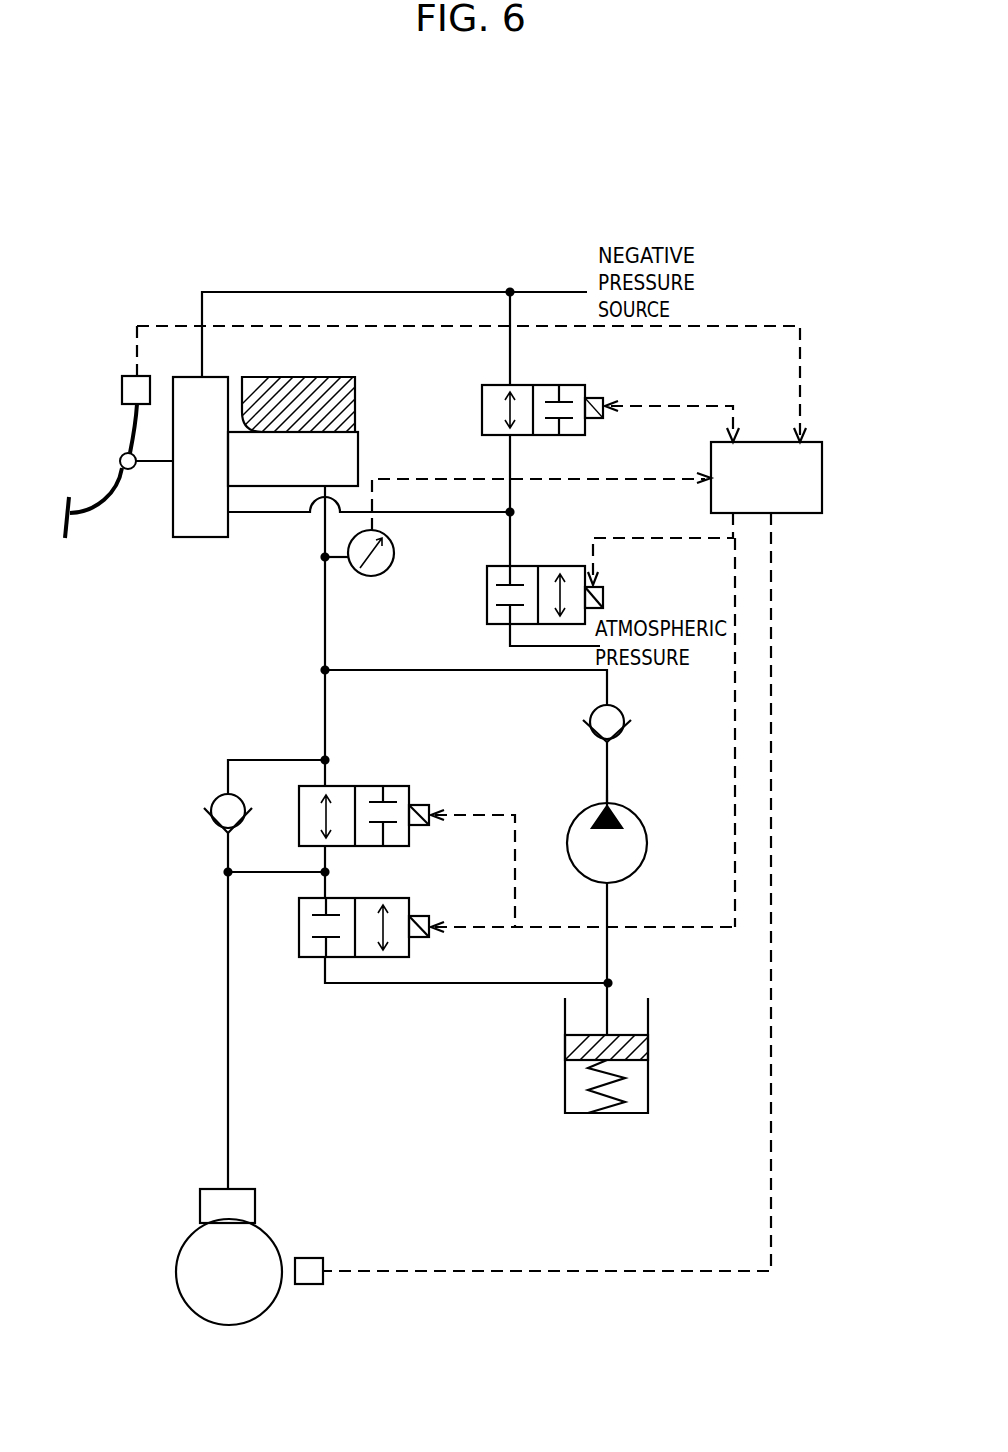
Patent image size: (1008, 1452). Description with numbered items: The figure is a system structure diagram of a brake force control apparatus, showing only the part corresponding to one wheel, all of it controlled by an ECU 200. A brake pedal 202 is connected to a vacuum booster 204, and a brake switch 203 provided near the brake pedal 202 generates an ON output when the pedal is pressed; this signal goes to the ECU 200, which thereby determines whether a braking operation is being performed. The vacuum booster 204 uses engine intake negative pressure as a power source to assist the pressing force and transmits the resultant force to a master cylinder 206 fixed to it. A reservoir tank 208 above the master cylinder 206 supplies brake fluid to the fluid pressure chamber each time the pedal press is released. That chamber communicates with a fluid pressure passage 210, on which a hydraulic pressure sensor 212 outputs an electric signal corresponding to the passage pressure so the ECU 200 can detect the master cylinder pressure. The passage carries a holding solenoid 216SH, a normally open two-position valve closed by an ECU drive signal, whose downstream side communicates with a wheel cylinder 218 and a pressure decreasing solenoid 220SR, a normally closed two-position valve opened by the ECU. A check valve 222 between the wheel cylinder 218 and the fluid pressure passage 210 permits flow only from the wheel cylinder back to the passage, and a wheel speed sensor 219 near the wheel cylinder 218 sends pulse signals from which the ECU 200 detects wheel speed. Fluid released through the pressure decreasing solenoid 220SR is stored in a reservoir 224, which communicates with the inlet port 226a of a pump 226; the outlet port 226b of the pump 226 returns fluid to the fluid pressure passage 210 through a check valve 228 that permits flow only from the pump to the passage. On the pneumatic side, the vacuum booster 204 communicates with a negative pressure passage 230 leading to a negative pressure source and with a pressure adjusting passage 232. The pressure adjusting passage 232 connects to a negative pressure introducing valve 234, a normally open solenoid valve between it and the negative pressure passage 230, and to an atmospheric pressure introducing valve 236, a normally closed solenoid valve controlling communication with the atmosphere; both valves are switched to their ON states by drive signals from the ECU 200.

The ECU 200 is at (822, 470).
The brake pedal 202 is at (87, 513).
The brake switch 203 is at (128, 376).
The vacuum booster 204 is at (195, 537).
The master cylinder 206 is at (358, 456).
The reservoir tank 208 is at (355, 381).
The fluid pressure passage 210 is at (325, 578).
The hydraulic pressure sensor 212 is at (394, 553).
The holding solenoid 216SH is at (371, 786).
The wheel cylinder 218 is at (250, 1205).
The wheel speed sensor 219 is at (305, 1258).
The pressure decreasing solenoid 220SR is at (390, 898).
The check valve 222 is at (213, 795).
The reservoir 224 is at (565, 1105).
The pump 226 is at (645, 822).
The inlet port 226a is at (610, 884).
The outlet port 226b is at (607, 798).
The check valve 228 is at (615, 712).
The negative pressure passage 230 is at (410, 292).
The pressure adjusting passage 232 is at (390, 508).
The negative pressure introducing valve 234 is at (580, 380).
The atmospheric pressure introducing valve 236 is at (603, 598).